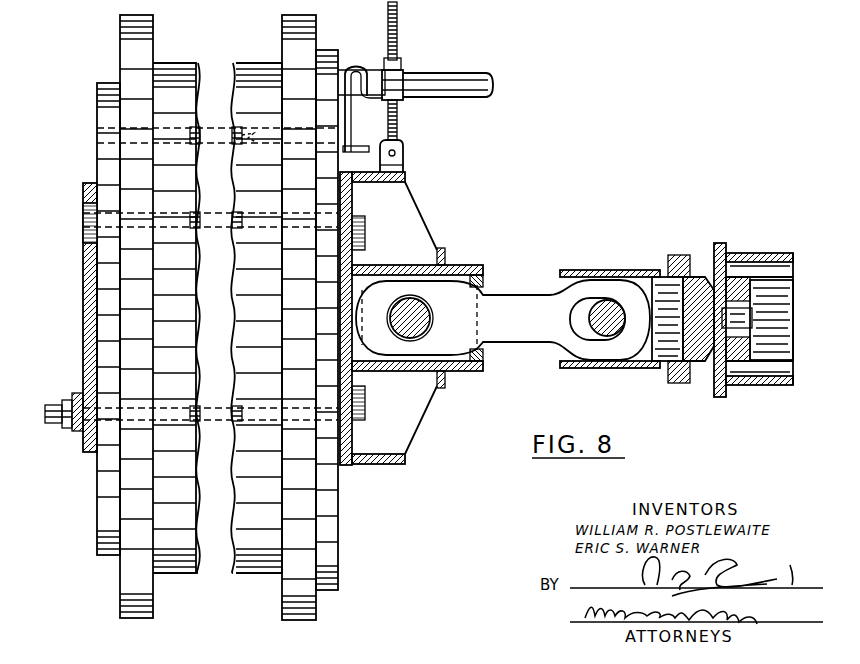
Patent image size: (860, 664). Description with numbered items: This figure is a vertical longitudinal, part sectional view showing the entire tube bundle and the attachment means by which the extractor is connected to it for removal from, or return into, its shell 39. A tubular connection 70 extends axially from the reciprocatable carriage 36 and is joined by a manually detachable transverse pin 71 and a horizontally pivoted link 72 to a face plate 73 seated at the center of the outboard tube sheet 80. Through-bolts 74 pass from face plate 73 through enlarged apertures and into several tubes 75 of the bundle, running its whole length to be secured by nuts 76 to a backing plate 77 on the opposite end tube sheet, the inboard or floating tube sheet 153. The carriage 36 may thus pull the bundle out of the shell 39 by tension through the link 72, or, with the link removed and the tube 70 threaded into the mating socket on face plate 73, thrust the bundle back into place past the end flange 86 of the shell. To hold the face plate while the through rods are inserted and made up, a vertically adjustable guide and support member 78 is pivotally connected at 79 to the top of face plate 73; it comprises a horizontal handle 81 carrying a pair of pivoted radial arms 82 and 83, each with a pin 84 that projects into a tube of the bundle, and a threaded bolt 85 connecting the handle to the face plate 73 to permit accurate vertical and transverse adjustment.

The carriage 36 is at (754, 255).
The shell 39 is at (180, 63).
The tubular connection 70 is at (644, 274).
The transverse pin 71 is at (611, 338).
The link 72 is at (518, 291).
The face plate 73 is at (420, 211).
The through-bolts 74 is at (206, 418).
The tubes 75 is at (200, 228).
The nuts 76 is at (55, 402).
The backing plate 77 is at (83, 288).
The guide and support member 78 is at (403, 72).
The pivot connection 79 is at (392, 153).
The outboard tube sheet 80 is at (339, 532).
The horizontal handle 81 is at (440, 73).
The radial arm 82 is at (352, 64).
The radial arm 83 is at (364, 140).
The pin 84 is at (242, 147).
The threaded bolt 85 is at (398, 26).
The end flange 86 is at (282, 45).
The floating tube sheet 153 is at (97, 104).